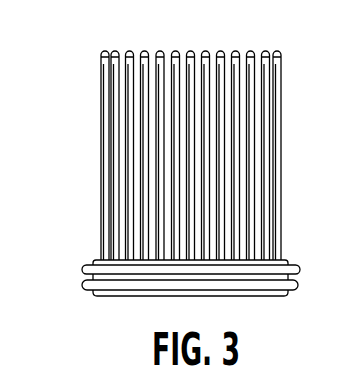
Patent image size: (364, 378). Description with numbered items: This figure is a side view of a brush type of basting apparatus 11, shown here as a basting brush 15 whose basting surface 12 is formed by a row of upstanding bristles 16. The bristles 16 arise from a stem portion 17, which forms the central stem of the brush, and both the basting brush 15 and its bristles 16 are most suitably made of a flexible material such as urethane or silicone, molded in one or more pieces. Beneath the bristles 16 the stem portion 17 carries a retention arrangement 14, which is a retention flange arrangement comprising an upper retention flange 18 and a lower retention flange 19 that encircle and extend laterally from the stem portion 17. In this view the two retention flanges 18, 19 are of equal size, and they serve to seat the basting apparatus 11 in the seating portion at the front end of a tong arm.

The basting apparatus 11 is at (66, 84).
The basting surface 12 is at (128, 27).
The retention arrangement 14 is at (50, 277).
The basting brush 15 is at (68, 126).
The bristles 16 is at (237, 122).
The stem portion 17 is at (264, 297).
The upper retention flange 18 is at (301, 269).
The lower retention flange 19 is at (299, 285).